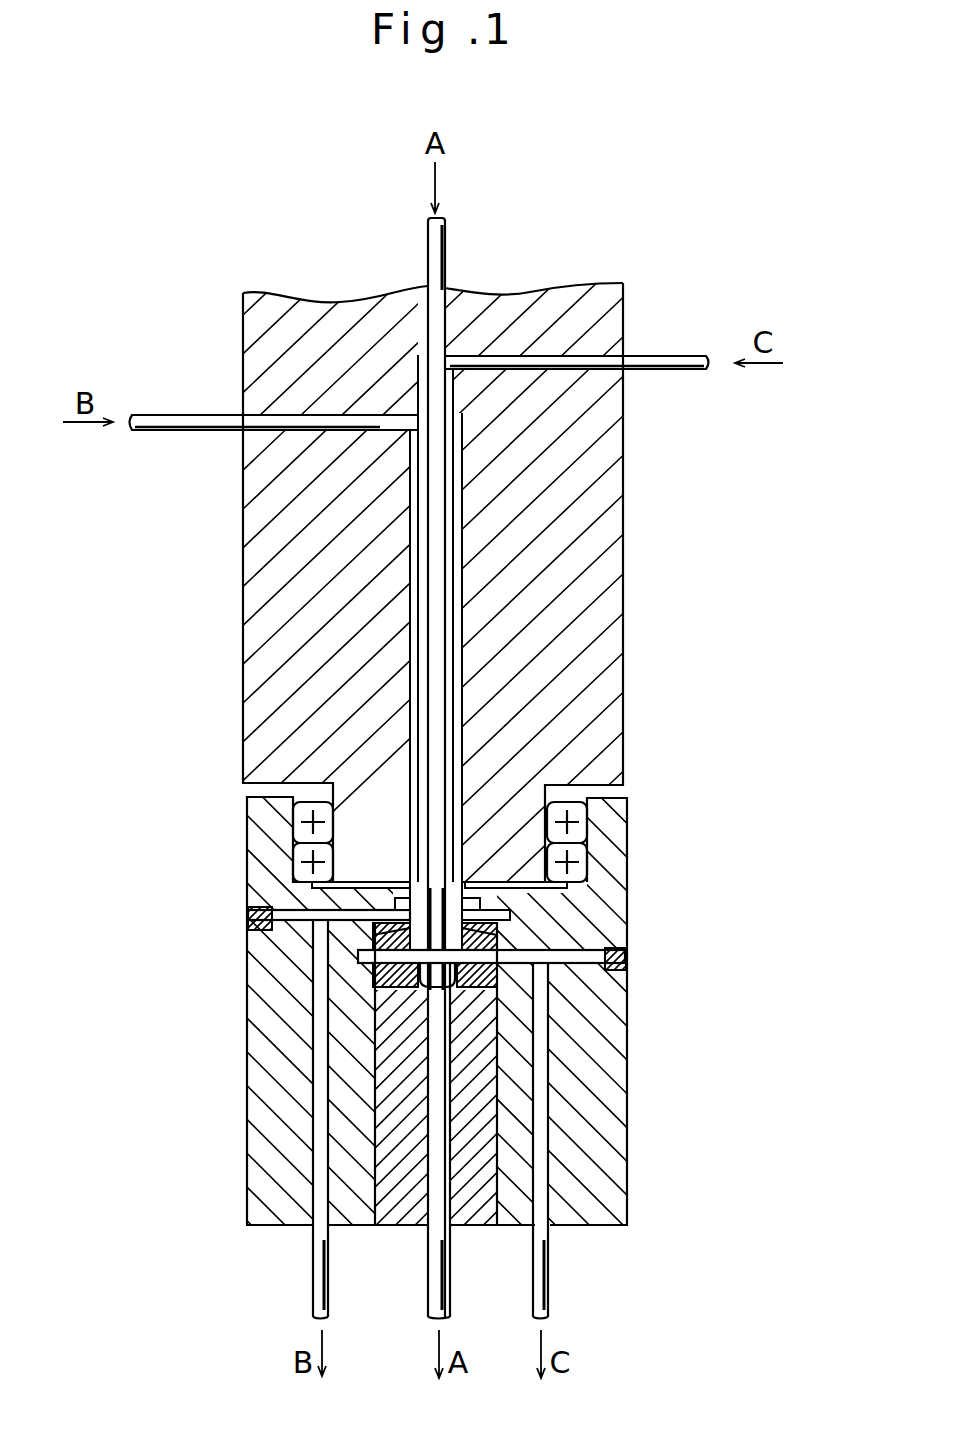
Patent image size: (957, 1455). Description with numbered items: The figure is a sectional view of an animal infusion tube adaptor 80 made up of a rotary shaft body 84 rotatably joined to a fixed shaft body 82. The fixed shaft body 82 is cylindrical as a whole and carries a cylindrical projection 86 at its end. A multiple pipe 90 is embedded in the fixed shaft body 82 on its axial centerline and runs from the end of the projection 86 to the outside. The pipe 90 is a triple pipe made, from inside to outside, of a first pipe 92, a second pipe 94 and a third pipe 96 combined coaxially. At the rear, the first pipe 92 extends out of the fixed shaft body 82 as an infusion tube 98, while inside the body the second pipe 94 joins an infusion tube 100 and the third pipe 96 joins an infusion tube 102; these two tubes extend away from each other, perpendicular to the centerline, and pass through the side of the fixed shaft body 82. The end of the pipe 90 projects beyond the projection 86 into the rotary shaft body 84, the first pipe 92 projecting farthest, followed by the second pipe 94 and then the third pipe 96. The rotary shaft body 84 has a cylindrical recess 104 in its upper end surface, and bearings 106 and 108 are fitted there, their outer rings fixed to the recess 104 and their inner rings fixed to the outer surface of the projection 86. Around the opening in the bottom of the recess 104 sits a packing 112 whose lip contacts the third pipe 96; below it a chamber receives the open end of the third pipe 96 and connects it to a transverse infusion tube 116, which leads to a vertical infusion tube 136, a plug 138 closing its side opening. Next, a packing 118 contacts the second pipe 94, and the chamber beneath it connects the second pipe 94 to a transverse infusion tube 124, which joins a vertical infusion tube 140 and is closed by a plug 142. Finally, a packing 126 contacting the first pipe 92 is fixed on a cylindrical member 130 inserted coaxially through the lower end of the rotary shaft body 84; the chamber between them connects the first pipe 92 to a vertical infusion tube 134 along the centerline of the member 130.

The adaptor 80 is at (247, 253).
The fixed shaft body 82 is at (625, 648).
The rotary shaft body 84 is at (628, 1140).
The cylindrical projection 86 is at (548, 903).
The multiple pipe 90 is at (468, 603).
The first pipe 92 is at (446, 267).
The second pipe 94 is at (457, 400).
The third pipe 96 is at (398, 470).
The infusion tube 98 is at (446, 226).
The infusion tube 100 is at (668, 357).
The infusion tube 102 is at (170, 415).
The cylindrical recess 104 is at (507, 878).
The bearing 106 is at (292, 817).
The bearing 108 is at (292, 865).
The packing 112 is at (403, 888).
The transverse infusion tube 116 is at (300, 924).
The packing 118 is at (505, 933).
The transverse infusion tube 124 is at (627, 953).
The packing 126 is at (547, 983).
The cylindrical member 130 is at (478, 1228).
The vertical infusion tube 134 is at (428, 1272).
The vertical infusion tube 136 is at (315, 1287).
The plug 138 is at (248, 922).
The vertical infusion tube 140 is at (550, 1297).
The plug 142 is at (625, 968).